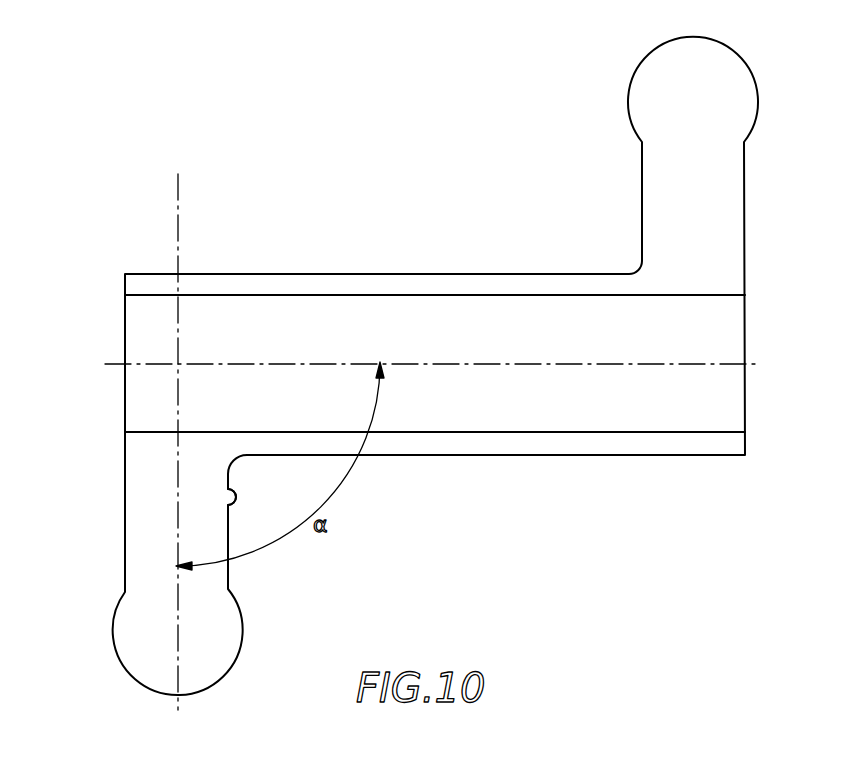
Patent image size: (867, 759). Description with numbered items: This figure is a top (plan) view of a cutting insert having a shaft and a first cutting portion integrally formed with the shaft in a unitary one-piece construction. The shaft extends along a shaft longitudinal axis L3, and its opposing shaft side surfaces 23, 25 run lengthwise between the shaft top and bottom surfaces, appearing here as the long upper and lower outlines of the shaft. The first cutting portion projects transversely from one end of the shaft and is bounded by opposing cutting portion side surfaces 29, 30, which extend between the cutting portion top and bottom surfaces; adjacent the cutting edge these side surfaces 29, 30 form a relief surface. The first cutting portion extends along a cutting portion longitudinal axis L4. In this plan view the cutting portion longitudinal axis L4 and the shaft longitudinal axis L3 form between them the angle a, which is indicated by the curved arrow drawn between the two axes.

The shaft side surface 23 is at (375, 274).
The shaft side surface 25 is at (497, 456).
The cutting portion side surface 29 is at (124, 521).
The cutting portion side surface 30 is at (228, 510).
The shaft longitudinal axis L3 is at (790, 364).
The cutting portion longitudinal axis L4 is at (178, 240).